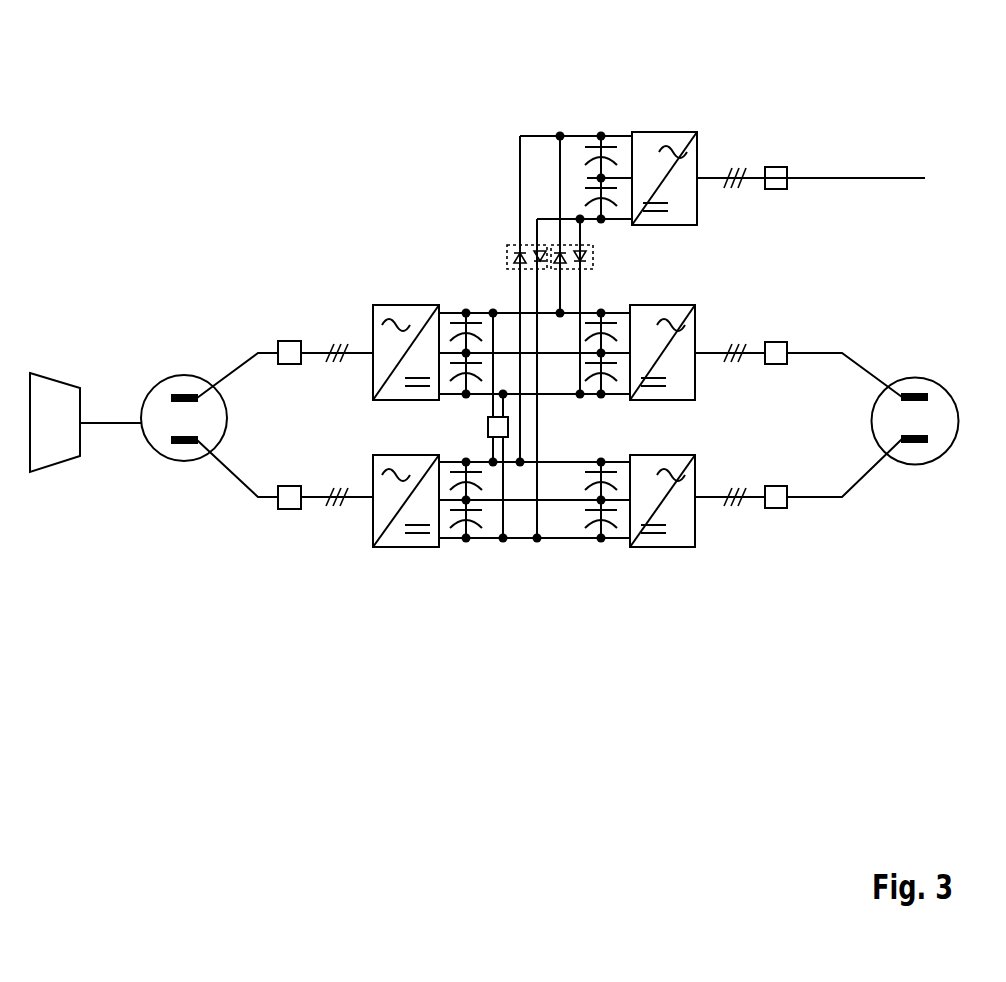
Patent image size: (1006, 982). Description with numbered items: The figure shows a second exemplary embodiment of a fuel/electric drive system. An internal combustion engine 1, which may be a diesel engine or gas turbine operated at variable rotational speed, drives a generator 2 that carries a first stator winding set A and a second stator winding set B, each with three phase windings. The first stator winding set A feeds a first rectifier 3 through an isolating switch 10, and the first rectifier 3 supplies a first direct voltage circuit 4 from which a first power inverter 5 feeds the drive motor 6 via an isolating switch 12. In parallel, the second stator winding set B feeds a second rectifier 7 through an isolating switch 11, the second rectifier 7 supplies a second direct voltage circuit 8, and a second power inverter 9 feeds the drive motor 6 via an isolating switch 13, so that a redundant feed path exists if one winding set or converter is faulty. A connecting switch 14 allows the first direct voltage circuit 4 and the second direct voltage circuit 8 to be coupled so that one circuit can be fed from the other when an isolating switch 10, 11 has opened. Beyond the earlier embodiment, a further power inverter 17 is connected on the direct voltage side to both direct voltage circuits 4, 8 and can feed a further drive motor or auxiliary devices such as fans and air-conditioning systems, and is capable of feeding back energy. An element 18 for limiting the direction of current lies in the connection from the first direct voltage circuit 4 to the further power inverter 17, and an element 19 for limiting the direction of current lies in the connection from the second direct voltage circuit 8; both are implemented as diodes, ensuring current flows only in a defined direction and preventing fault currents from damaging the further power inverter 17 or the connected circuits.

The internal combustion engine 1 is at (49, 378).
The generator 2 is at (152, 391).
The first stator winding set A is at (177, 395).
The second stator winding set B is at (177, 445).
The first rectifier 3 is at (389, 305).
The first direct voltage circuit 4 is at (497, 267).
The first power inverter 5 is at (660, 305).
The drive motor 6 is at (933, 378).
The second rectifier 7 is at (410, 547).
The second direct voltage circuit 8 is at (553, 556).
The second power inverter 9 is at (658, 547).
The isolating switch 10 is at (288, 340).
The isolating switch 11 is at (288, 509).
The isolating switch 12 is at (782, 342).
The isolating switch 13 is at (783, 508).
The connecting switch 14 is at (488, 417).
The further power inverter 17 is at (667, 132).
The element for limiting the direction of current 18 is at (555, 244).
The element for limiting the direction of current 19 is at (530, 244).